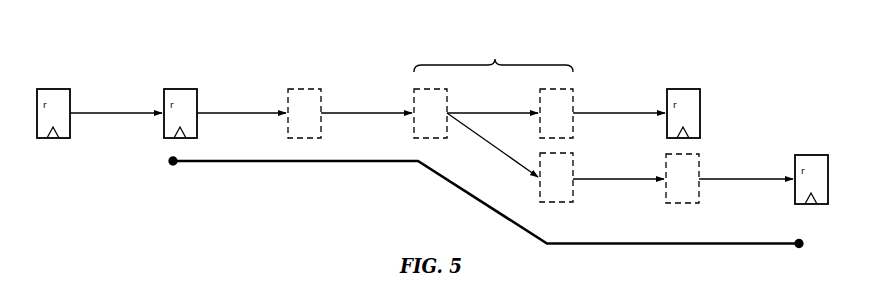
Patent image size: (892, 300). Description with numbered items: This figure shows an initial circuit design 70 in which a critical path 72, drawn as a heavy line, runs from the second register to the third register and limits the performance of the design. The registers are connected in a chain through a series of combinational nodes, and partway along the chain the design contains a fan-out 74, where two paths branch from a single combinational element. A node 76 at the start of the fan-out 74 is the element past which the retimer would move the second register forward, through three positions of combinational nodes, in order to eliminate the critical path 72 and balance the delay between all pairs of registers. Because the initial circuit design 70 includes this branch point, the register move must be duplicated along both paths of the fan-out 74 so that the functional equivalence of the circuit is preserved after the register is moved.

The initial circuit design 70 is at (687, 42).
The critical path 72 is at (462, 190).
The fan-out 74 is at (496, 61).
The node 76 is at (431, 90).